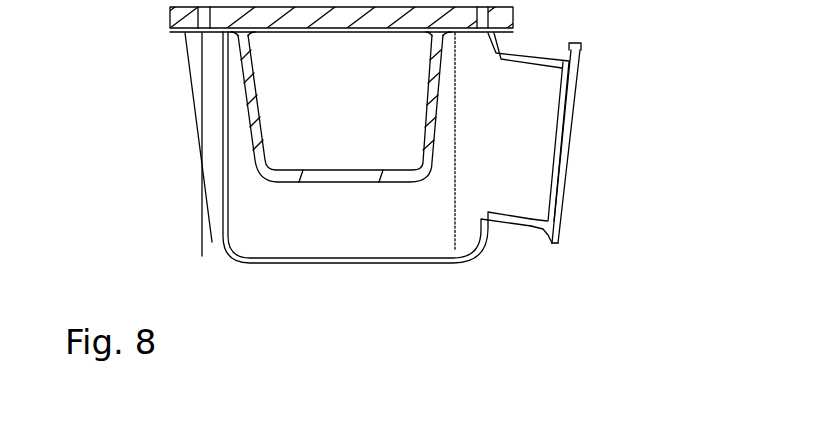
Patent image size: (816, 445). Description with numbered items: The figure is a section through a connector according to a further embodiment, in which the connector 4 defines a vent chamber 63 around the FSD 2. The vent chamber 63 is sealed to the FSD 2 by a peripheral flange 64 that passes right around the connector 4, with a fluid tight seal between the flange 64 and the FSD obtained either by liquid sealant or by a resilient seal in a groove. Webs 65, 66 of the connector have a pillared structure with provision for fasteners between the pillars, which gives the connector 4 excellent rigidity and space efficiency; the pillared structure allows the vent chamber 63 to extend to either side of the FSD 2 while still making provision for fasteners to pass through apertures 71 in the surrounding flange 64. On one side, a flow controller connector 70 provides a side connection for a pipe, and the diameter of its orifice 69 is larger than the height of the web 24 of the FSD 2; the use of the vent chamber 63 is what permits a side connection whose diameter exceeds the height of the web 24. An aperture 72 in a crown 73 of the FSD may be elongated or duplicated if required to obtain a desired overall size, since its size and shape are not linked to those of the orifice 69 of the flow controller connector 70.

The FSD 2 is at (257, 169).
The connector 4 is at (449, 259).
The web 24 is at (486, 182).
The vent chamber 63 is at (328, 237).
The peripheral flange 64 is at (197, 36).
The web 65 is at (455, 94).
The web 66 is at (206, 195).
The orifice 69 is at (528, 145).
The flow controller connector 70 is at (523, 226).
The apertures 71 is at (188, 55).
The aperture 72 is at (378, 184).
The crown 73 is at (283, 181).